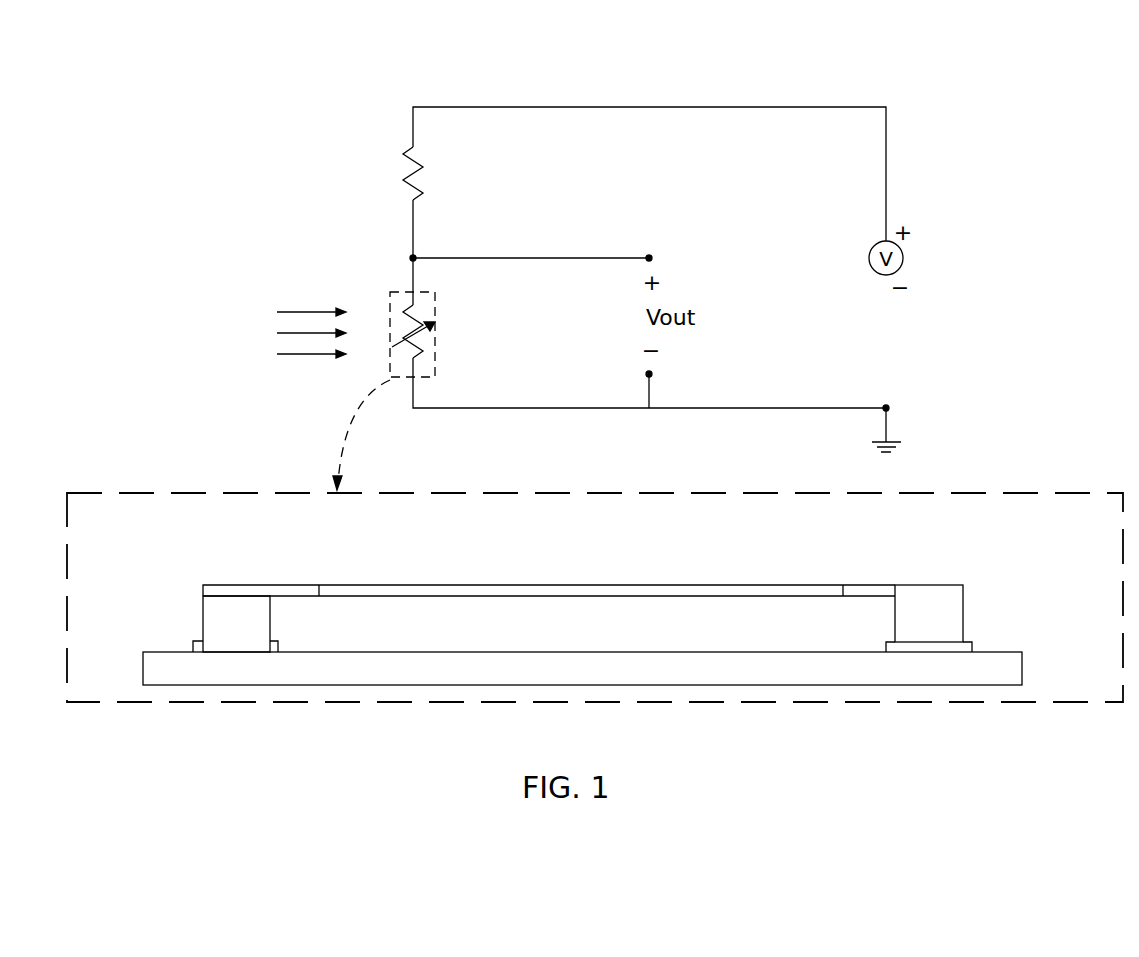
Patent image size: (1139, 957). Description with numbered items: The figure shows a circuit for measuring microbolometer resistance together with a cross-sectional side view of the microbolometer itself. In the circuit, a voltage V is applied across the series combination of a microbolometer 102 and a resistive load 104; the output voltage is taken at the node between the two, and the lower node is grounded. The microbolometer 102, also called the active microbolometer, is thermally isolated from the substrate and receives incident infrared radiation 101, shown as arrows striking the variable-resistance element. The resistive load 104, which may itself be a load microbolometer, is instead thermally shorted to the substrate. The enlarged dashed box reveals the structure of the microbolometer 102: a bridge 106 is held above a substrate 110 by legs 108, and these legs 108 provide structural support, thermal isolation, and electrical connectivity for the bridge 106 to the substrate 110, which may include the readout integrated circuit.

The incident infrared radiation 101 is at (290, 357).
The microbolometer 102 is at (436, 350).
The resistive load 104 is at (420, 185).
The bridge 106 is at (801, 585).
The legs 108 is at (207, 614).
The substrate 110 is at (1023, 662).